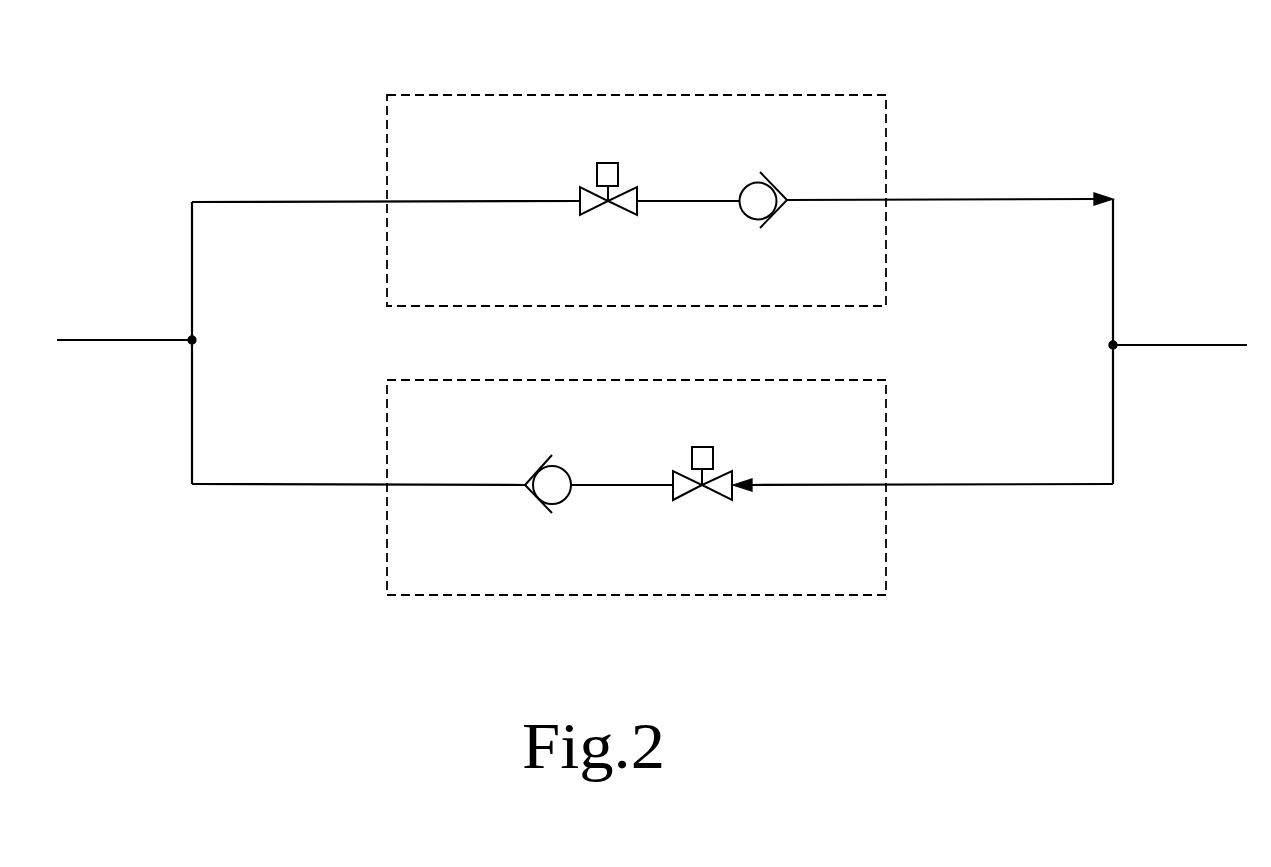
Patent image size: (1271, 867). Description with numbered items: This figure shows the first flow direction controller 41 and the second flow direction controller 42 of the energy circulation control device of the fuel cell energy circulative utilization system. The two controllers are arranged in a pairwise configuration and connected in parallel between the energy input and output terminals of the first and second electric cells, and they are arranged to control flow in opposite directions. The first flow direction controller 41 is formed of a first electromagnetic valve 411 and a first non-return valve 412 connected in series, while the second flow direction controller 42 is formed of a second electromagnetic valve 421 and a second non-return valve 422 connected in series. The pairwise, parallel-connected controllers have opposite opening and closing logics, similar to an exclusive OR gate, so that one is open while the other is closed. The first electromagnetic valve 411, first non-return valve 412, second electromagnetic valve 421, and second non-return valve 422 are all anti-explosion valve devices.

The first flow direction controller 41 is at (676, 95).
The first electromagnetic valve 411 is at (607, 163).
The first non-return valve 412 is at (748, 182).
The second flow direction controller 42 is at (647, 595).
The second electromagnetic valve 421 is at (702, 447).
The second non-return valve 422 is at (563, 466).